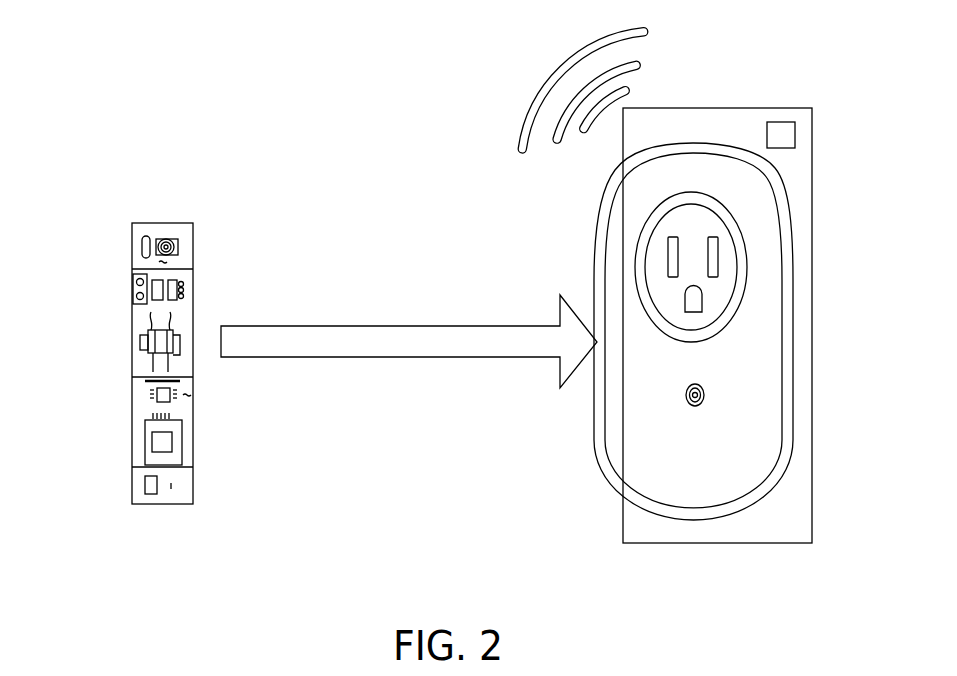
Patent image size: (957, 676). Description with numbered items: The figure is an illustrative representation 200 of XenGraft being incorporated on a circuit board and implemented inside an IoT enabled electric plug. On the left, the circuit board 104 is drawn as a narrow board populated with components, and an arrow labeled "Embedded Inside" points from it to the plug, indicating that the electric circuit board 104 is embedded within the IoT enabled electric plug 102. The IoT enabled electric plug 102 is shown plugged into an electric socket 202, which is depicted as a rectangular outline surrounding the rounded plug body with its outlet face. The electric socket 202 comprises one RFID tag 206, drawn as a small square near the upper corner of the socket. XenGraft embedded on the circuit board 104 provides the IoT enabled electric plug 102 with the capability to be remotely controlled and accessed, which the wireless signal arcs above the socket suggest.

The illustrative representation 200 is at (108, 95).
The circuit board 104 is at (192, 467).
The electric socket 202 is at (768, 108).
The RFID tag 206 is at (795, 135).
The IoT enabled electric plug 102 is at (793, 200).